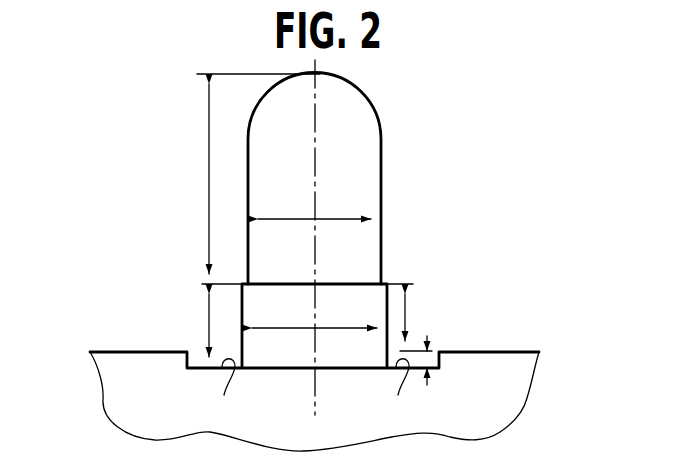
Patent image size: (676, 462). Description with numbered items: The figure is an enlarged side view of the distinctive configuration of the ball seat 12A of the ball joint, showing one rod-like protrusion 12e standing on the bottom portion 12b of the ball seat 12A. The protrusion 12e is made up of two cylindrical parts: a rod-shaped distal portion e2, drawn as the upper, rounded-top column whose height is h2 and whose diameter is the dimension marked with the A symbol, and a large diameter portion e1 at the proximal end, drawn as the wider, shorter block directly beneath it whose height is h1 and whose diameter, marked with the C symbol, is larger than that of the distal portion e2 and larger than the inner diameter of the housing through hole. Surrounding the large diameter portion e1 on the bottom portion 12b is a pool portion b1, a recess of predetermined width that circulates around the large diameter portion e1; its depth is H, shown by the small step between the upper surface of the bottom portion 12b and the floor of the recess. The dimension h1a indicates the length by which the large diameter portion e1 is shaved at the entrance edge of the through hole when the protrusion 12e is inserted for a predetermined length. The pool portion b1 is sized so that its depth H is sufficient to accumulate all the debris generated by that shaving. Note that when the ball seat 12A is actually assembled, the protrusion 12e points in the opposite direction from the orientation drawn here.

The ball seat 12A is at (387, 218).
The protrusion 12e is at (387, 220).
The distal portion e2 is at (362, 150).
The large diameter portion e1 is at (358, 303).
The bottom portion 12b is at (132, 393).
The pool portion b1 is at (312, 392).
The height of distal portion h2 is at (246, 179).
The height of large diameter portion h1 is at (193, 325).
The shaved length h1a is at (420, 317).
The depth of pool portion H is at (437, 373).